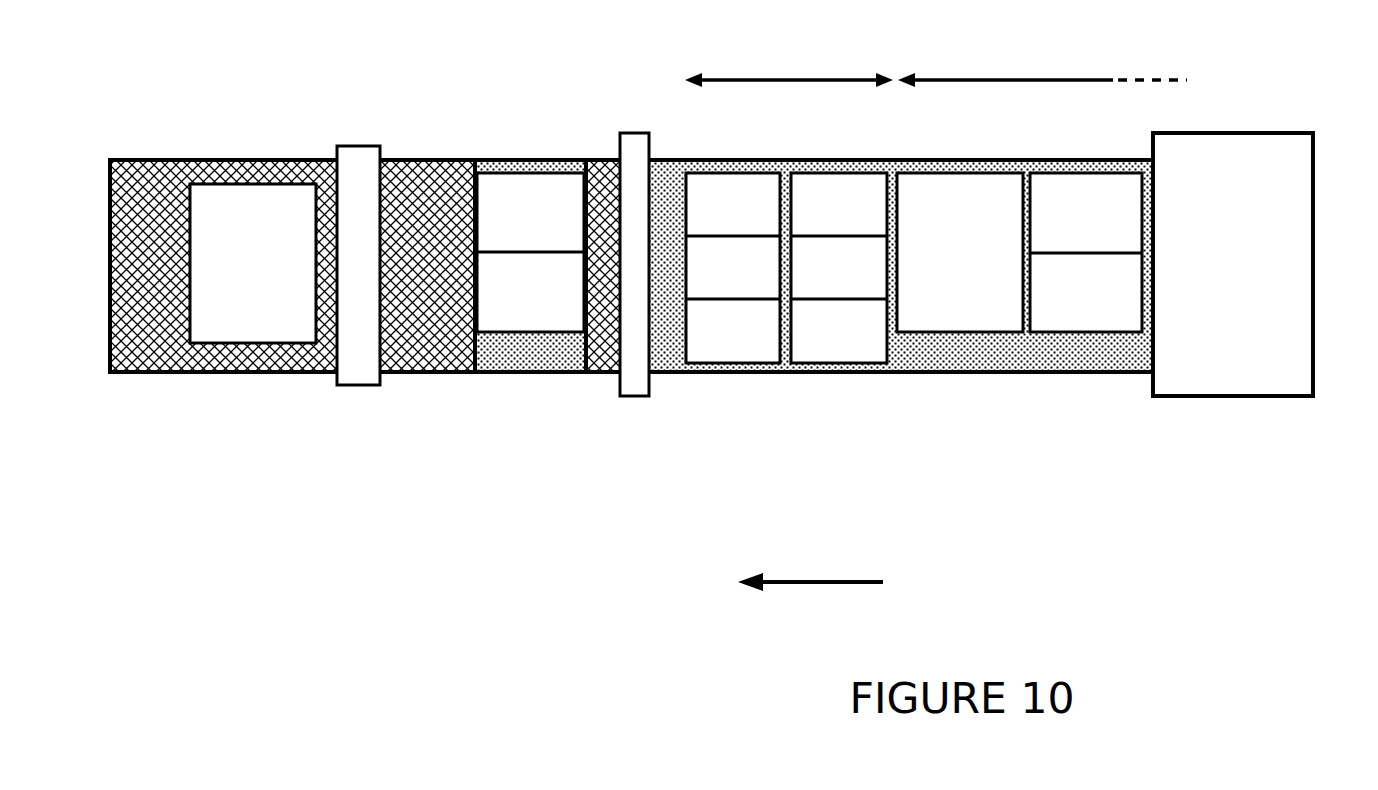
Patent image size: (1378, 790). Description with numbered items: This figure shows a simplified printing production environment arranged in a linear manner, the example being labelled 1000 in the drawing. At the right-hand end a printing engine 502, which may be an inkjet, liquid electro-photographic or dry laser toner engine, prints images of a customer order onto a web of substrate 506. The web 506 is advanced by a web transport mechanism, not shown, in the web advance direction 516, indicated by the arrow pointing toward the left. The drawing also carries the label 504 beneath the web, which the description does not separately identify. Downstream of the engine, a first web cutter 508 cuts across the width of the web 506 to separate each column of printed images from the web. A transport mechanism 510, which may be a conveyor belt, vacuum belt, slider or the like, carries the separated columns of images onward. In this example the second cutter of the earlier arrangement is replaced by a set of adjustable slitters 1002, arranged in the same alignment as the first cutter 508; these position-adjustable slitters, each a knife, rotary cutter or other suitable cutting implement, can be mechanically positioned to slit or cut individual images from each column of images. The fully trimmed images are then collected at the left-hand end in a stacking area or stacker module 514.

The printing engine 502 is at (1313, 213).
The web 504 is at (907, 407).
The web of substrate 506 is at (843, 372).
The first web cutter 508 is at (648, 132).
The transport mechanism 510 is at (510, 170).
The stacker module 514 is at (243, 158).
The web advance direction 516 is at (855, 582).
The web processing arrangement 1000 is at (743, 265).
The adjustable slitters 1002 is at (360, 145).